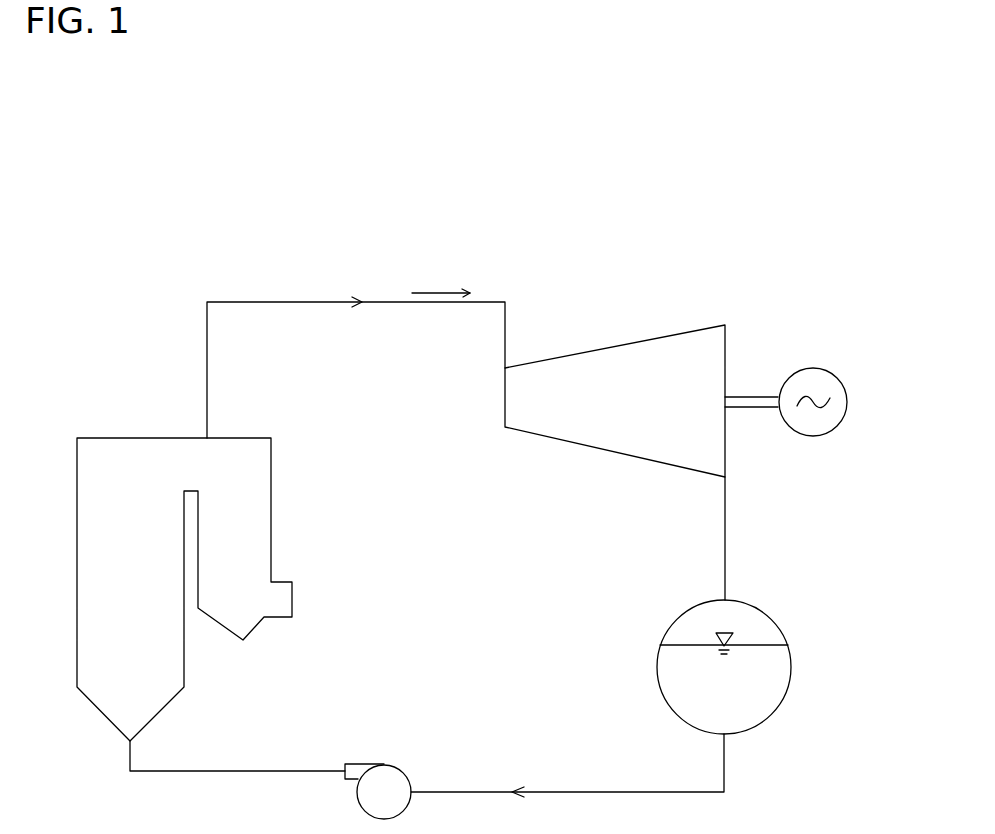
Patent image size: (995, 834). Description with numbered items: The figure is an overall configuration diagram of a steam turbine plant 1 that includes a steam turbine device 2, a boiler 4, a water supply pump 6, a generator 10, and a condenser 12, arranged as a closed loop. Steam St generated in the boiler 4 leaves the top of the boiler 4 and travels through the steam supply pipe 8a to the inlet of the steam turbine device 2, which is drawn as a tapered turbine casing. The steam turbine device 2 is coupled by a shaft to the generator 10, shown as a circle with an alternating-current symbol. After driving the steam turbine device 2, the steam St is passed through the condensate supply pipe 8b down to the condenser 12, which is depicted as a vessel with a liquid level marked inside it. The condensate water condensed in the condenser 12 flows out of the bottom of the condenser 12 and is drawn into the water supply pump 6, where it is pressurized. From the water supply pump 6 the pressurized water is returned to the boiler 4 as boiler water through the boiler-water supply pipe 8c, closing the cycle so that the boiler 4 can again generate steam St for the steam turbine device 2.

The steam turbine plant 1 is at (123, 173).
The steam turbine device 2 is at (610, 348).
The boiler 4 is at (121, 438).
The water supply pump 6 is at (392, 765).
The steam supply pipe 8a is at (277, 302).
The condensate supply pipe 8b is at (725, 538).
The boiler-water supply pipe 8c is at (582, 792).
The generator 10 is at (827, 368).
The condenser 12 is at (765, 607).